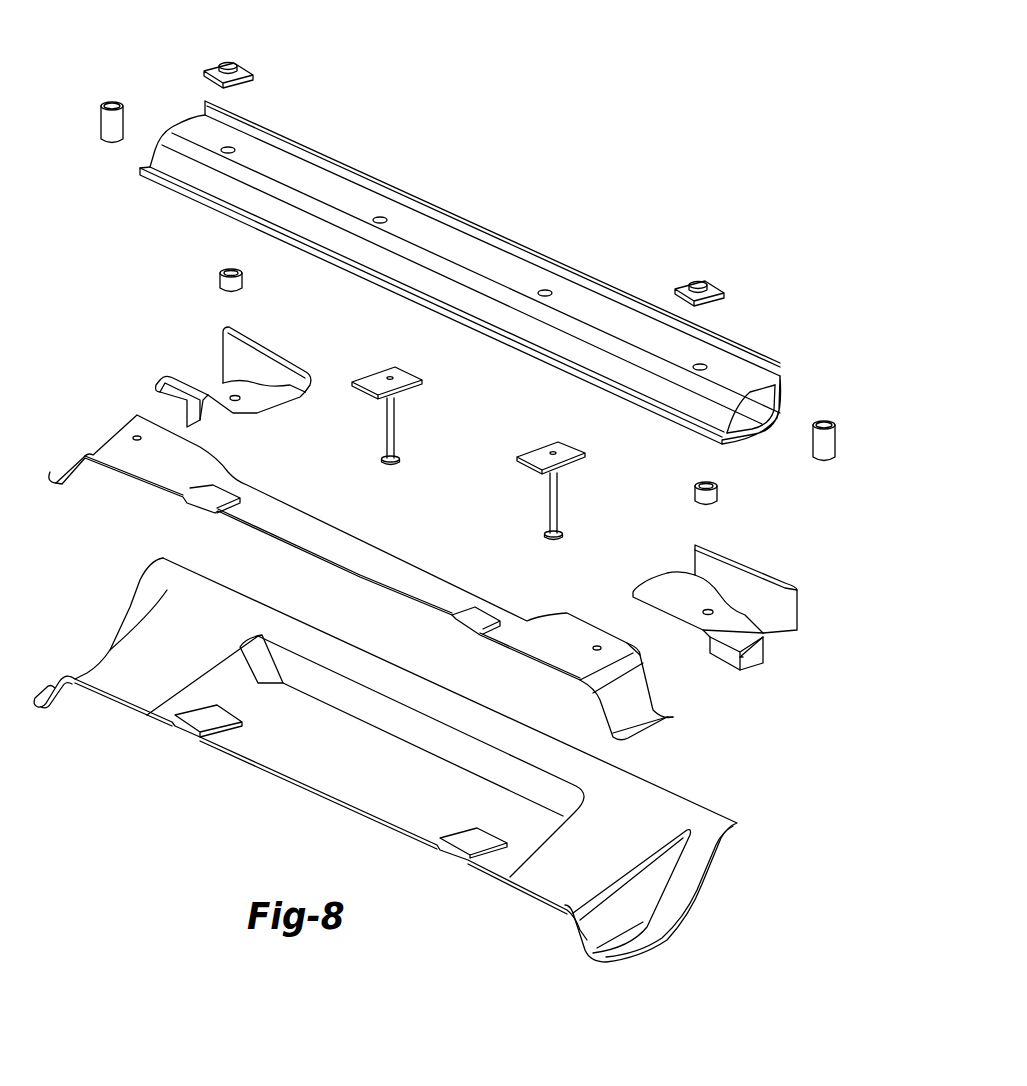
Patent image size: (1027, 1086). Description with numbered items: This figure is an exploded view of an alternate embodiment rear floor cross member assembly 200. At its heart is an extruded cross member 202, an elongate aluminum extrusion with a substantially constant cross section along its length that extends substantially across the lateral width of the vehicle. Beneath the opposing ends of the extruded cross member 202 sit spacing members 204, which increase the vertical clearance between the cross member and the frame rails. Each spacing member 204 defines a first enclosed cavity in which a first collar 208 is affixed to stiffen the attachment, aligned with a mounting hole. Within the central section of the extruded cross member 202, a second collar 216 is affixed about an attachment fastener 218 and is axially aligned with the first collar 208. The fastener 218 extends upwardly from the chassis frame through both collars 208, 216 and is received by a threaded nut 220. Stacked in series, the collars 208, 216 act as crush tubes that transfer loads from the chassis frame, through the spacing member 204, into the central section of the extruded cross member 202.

The rear floor cross member assembly 200 is at (138, 232).
The extruded cross member 202 is at (440, 238).
The spacing member 204 is at (222, 355).
The first collar 208 is at (220, 283).
The second collar 216 is at (102, 122).
The attachment fastener 218 is at (395, 432).
The threaded nut 220 is at (226, 64).